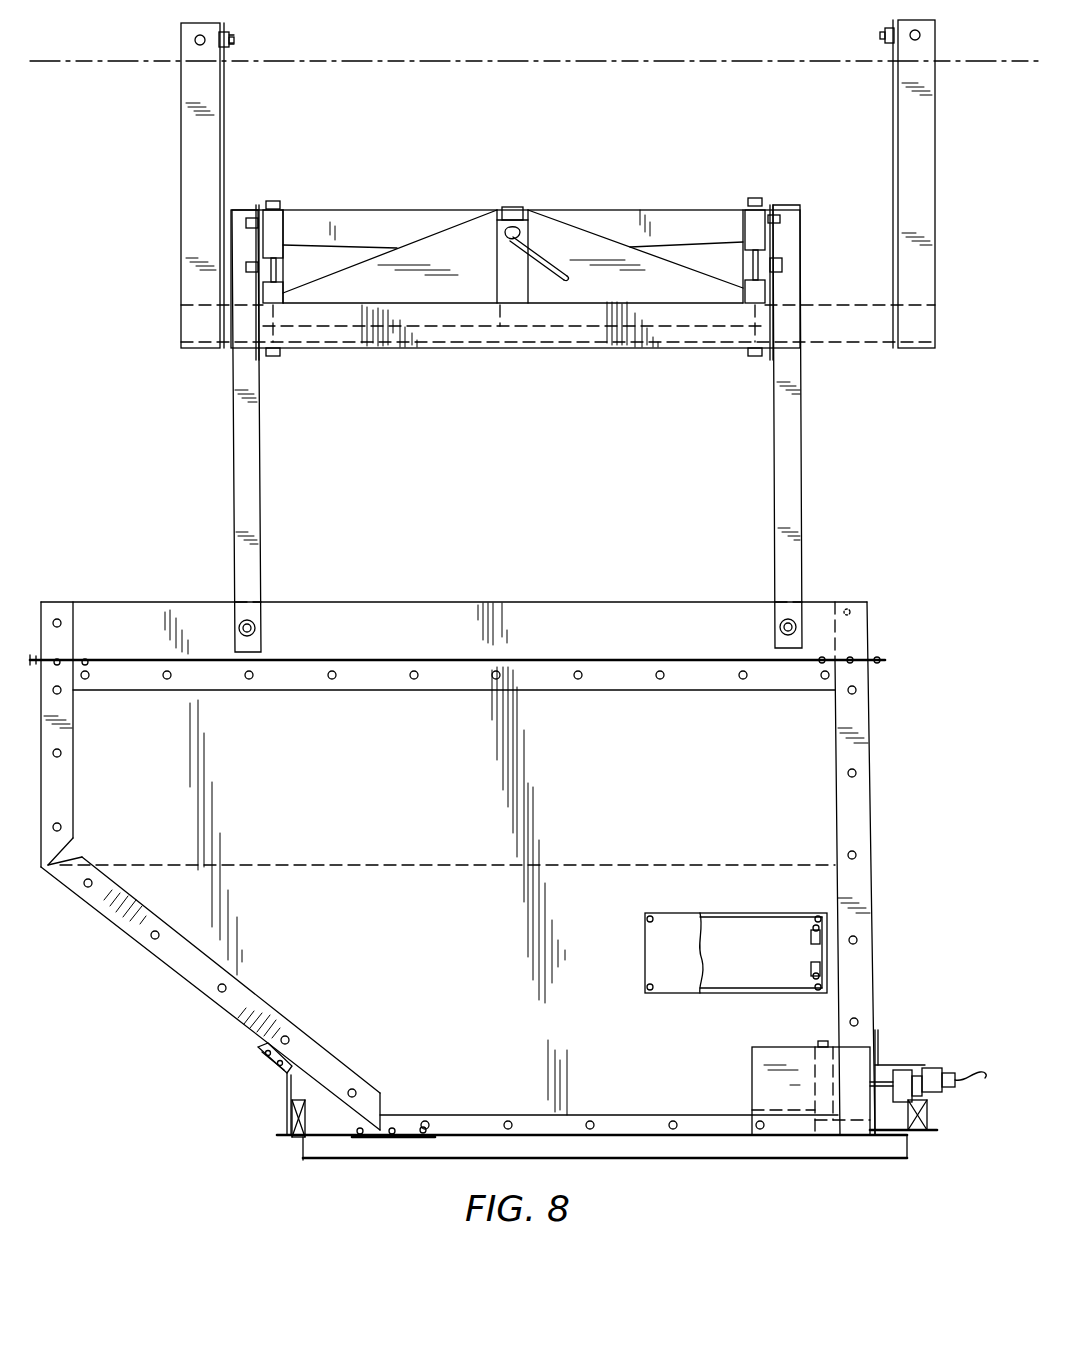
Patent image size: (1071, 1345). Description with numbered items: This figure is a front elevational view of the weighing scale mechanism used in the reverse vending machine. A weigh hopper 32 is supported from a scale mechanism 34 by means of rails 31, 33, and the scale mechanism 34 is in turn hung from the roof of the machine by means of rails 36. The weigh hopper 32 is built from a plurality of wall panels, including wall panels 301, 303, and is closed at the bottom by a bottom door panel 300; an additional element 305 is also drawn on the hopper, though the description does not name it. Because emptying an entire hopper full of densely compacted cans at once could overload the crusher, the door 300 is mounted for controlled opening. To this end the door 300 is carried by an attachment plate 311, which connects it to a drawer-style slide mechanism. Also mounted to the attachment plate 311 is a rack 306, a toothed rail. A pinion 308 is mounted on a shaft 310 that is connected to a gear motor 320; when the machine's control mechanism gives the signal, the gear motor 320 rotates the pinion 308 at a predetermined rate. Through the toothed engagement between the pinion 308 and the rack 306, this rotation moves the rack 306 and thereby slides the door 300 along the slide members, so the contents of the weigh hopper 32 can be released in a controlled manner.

The rail 31 is at (252, 445).
The weigh hopper 32 is at (376, 793).
The rail 33 is at (855, 332).
The scale mechanism 34 is at (480, 256).
The rail 36 is at (224, 104).
The bottom door panel 300 is at (707, 1168).
The wall panel 301 is at (726, 800).
The wall panel 303 is at (870, 812).
The discharge chute 305 is at (82, 903).
The rack 306 is at (905, 1110).
The pinion 308 is at (895, 1078).
The shaft 310 is at (875, 1070).
The attachment plate 311 is at (928, 1120).
The gear motor 320 is at (795, 1104).